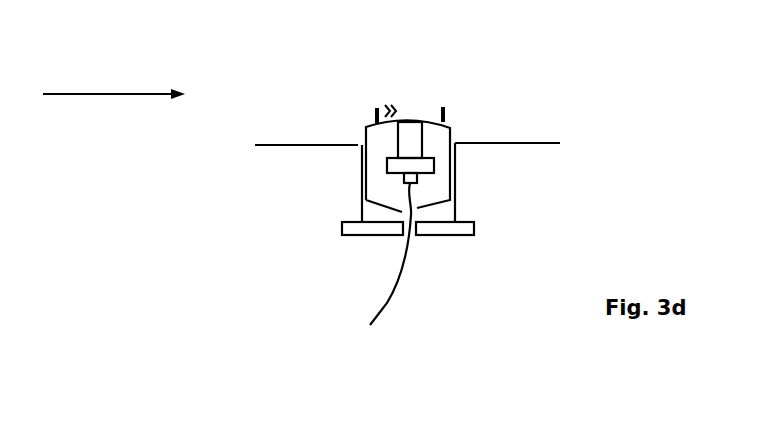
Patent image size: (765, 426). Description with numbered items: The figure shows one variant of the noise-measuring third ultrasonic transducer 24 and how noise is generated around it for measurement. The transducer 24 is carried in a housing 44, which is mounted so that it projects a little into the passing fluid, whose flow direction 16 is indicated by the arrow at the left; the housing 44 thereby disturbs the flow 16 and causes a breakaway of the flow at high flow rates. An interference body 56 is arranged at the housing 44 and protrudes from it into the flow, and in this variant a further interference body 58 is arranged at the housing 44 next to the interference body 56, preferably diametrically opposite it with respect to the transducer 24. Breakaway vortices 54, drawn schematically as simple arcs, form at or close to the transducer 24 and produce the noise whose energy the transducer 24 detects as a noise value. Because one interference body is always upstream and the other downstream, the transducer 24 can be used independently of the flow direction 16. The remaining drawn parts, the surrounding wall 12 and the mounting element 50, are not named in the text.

The plate / mounting surface 12 is at (547, 144).
The flow direction 16 is at (110, 95).
The third ultrasonic transducer 24 is at (422, 140).
The housing 44 is at (456, 190).
The left clamp wall 50 is at (358, 187).
The breakaway vortices 54 is at (388, 103).
The interference body 56 is at (375, 115).
The further interference body 58 is at (443, 108).